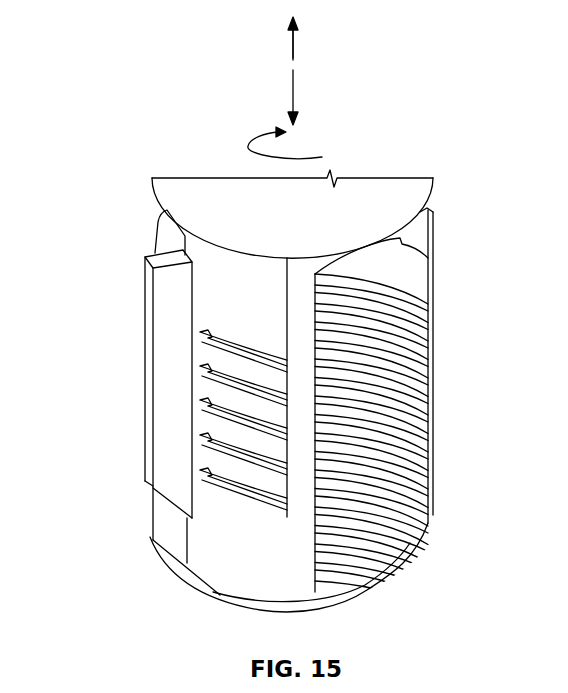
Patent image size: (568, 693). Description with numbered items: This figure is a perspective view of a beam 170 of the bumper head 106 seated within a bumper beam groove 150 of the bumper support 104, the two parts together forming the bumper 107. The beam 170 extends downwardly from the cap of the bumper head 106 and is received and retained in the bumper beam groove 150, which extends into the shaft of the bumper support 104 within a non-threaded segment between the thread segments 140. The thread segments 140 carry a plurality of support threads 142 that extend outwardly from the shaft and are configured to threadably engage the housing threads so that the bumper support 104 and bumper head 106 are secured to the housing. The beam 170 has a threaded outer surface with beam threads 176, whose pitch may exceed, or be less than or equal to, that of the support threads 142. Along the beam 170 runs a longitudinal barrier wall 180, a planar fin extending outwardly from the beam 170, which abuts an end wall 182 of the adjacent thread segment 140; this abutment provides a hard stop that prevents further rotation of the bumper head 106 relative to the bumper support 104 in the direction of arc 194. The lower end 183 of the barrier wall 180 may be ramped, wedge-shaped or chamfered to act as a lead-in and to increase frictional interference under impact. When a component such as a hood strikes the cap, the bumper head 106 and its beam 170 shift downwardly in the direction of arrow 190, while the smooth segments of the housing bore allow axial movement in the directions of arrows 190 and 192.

The bumper support 104 is at (446, 484).
The bumper head 106 is at (442, 159).
The bumper 107 is at (150, 140).
The thread segments 140 is at (412, 394).
The support threads 142 is at (413, 330).
The bumper beam groove 150 is at (213, 512).
The beam 170 is at (263, 288).
The beam threads 176 is at (217, 380).
The barrier walls 180 is at (144, 333).
The end walls 182 is at (150, 522).
The lower ends 183 is at (147, 483).
The arrow 190 is at (296, 80).
The arrow 192 is at (296, 42).
The arc 194 is at (295, 157).